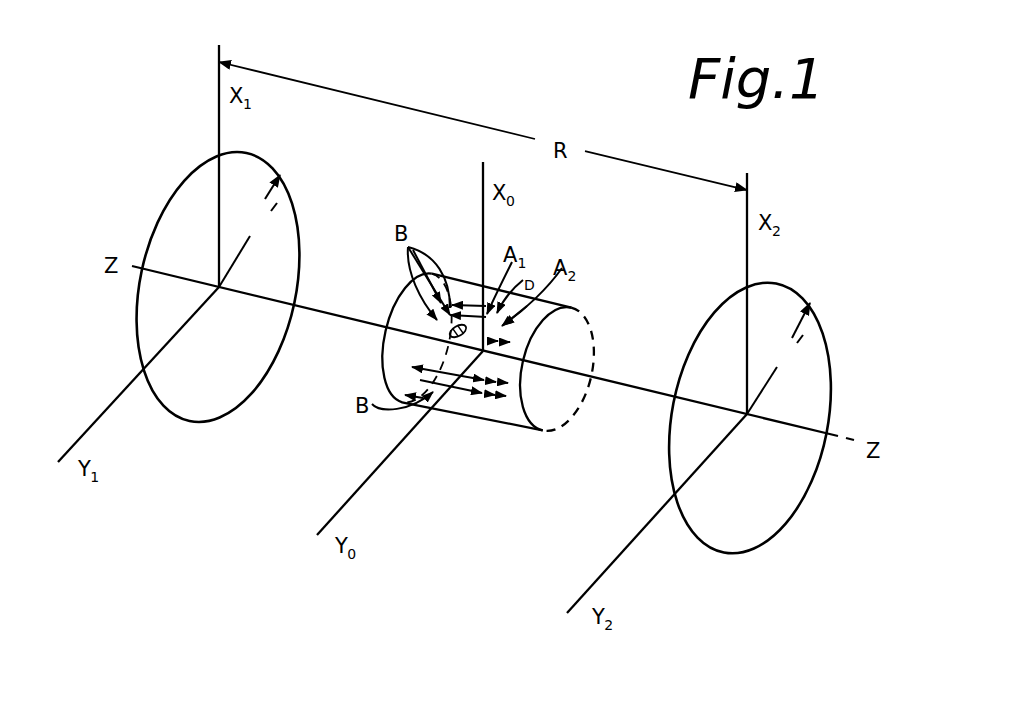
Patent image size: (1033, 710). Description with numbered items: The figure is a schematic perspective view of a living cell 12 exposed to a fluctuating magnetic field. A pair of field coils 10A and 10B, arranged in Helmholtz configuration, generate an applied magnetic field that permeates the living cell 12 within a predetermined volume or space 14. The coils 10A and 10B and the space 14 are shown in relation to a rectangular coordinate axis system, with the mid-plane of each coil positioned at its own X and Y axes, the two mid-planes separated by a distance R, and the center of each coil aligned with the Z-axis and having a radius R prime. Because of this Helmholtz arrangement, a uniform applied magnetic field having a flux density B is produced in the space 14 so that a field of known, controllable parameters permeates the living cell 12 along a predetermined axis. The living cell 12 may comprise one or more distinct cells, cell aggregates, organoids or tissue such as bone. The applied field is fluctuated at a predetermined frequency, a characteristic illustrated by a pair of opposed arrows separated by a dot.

The field coil 10A is at (300, 211).
The field coil 10B is at (713, 318).
The living cell 12 is at (440, 336).
The predetermined volume or space 14 is at (397, 286).